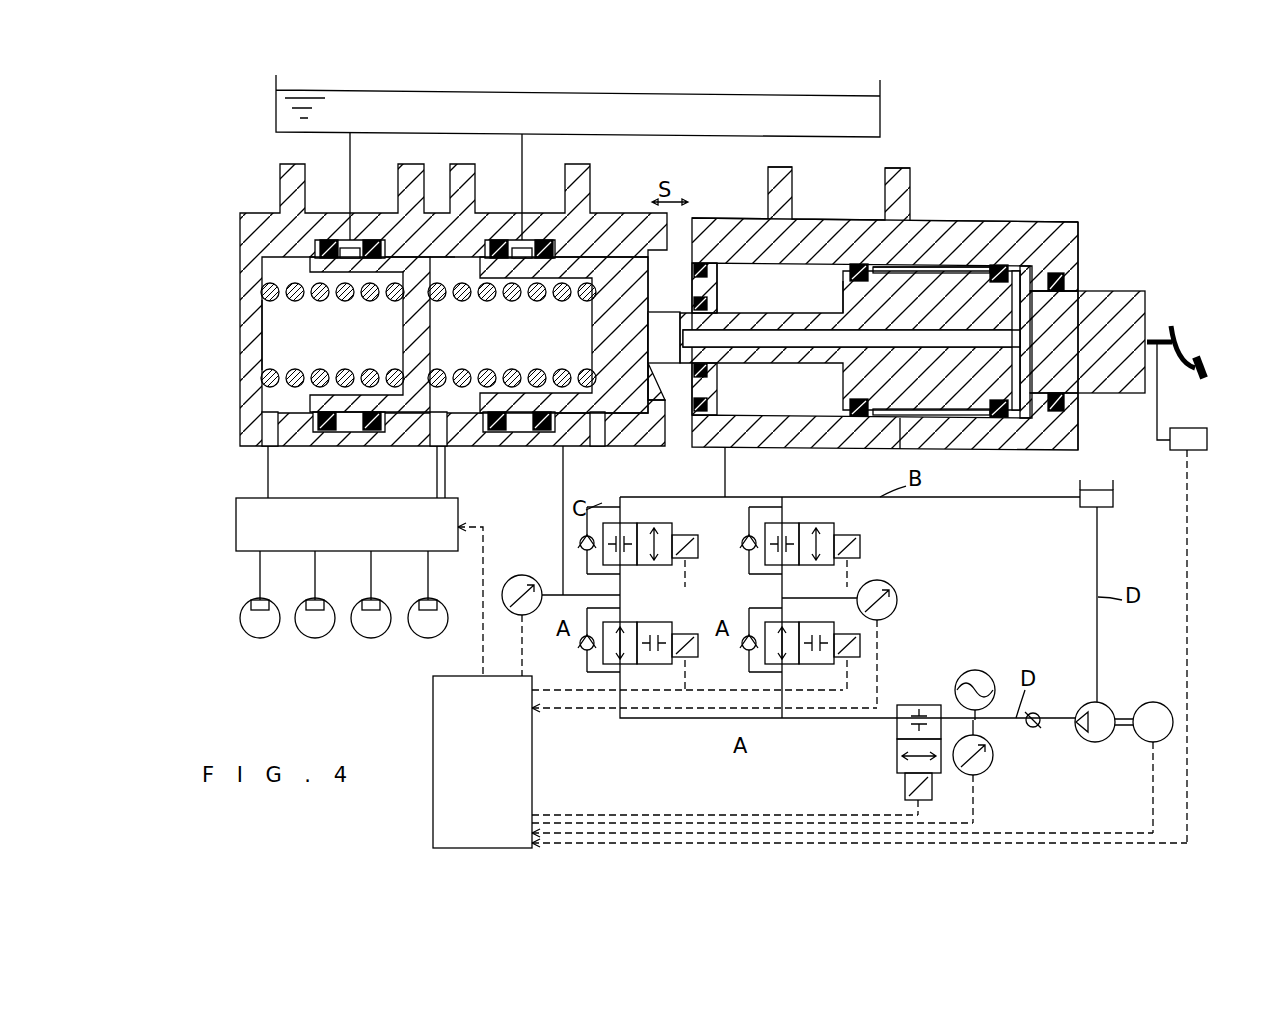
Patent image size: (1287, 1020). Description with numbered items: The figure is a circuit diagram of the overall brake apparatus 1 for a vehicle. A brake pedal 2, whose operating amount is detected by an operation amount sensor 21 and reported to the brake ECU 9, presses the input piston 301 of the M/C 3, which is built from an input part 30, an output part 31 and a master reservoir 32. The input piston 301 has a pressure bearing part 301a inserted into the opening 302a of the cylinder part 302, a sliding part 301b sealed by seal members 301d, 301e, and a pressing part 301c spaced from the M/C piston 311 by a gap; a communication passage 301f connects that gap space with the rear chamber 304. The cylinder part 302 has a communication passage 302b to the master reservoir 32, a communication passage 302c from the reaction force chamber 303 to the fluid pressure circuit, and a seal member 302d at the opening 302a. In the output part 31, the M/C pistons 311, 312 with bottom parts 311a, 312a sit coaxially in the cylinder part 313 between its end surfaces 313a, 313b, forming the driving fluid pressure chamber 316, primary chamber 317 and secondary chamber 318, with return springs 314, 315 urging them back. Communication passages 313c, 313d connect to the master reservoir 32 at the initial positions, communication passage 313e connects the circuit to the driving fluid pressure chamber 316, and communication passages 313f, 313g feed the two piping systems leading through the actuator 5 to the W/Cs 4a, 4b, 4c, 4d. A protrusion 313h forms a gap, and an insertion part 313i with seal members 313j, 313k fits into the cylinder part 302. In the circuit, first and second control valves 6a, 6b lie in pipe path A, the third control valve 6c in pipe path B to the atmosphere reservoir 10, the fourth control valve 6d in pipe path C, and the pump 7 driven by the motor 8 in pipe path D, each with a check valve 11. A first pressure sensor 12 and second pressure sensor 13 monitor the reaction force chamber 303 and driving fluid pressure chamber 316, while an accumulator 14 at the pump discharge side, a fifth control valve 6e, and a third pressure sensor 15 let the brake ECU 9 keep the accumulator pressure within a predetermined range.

The brake apparatus 1 is at (1224, 157).
The brake pedal 2 is at (1207, 372).
The M/C 3 is at (938, 155).
The W/C 4a is at (268, 600).
The W/C 4b is at (323, 600).
The W/C 4c is at (379, 600).
The W/C 4d is at (436, 600).
The actuator for brake fluid pressure control 5 is at (236, 527).
The first control valve 6a is at (802, 621).
The second control valve 6b is at (642, 621).
The third control valve 6c is at (802, 522).
The fourth control valve 6d is at (640, 522).
The fifth control valve 6e is at (897, 755).
The pump 7 is at (1100, 703).
The motor 8 is at (1153, 702).
The brake ECU 9 is at (433, 700).
The atmosphere reservoir 10 is at (1086, 509).
The check valve 11 is at (1040, 714).
The first pressure sensor 12 is at (897, 600).
The second pressure sensor 13 is at (515, 576).
The accumulator 14 is at (975, 670).
The third pressure sensor 15 is at (993, 760).
The operation amount sensor 21 is at (1207, 440).
The input part 30 is at (1043, 214).
The output part 31 is at (252, 193).
The master reservoir 32 is at (880, 98).
The input piston 301 is at (1082, 382).
The pressure bearing part 301a is at (1135, 394).
The sliding part 301b is at (920, 264).
The pressing part 301c is at (800, 300).
The seal member 301d is at (905, 272).
The seal member 301e is at (982, 266).
The communication passage 301f is at (1020, 418).
The cylinder part 302 is at (1046, 242).
The opening 302a is at (1076, 290).
The communication passage 302b is at (846, 280).
The communication passage 302c is at (770, 420).
The seal member 302d is at (1068, 264).
The reaction force chamber 303 is at (772, 240).
The rear chamber 304 is at (960, 449).
The M/C piston 311 is at (590, 382).
The bottom part 311a is at (572, 442).
The M/C piston 312 is at (415, 412).
The bottom part 312a is at (455, 268).
The cylinder part 313 is at (259, 236).
The one end surface 313a is at (728, 460).
The other end surface 313b is at (272, 378).
The communication passage 313c is at (528, 244).
The communication passage 313d is at (360, 242).
The communication passage 313e is at (562, 500).
The communication passage 313f is at (441, 448).
The communication passage 313g is at (281, 448).
The protrusion 313h is at (600, 446).
The insertion part 313i is at (706, 292).
The seal member 313j is at (700, 262).
The seal member 313k is at (712, 282).
The return spring 314 is at (540, 432).
The return spring 315 is at (345, 432).
The driving fluid pressure chamber 316 is at (655, 422).
The primary chamber 317 is at (480, 348).
The secondary chamber 318 is at (272, 332).